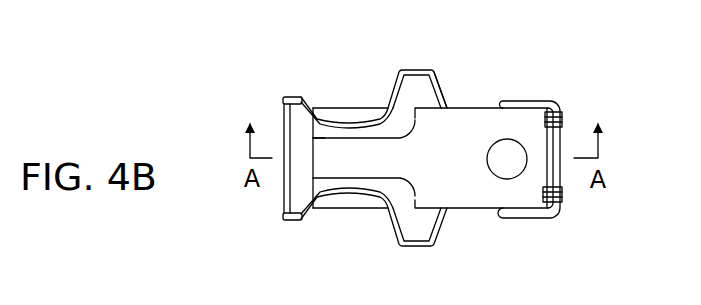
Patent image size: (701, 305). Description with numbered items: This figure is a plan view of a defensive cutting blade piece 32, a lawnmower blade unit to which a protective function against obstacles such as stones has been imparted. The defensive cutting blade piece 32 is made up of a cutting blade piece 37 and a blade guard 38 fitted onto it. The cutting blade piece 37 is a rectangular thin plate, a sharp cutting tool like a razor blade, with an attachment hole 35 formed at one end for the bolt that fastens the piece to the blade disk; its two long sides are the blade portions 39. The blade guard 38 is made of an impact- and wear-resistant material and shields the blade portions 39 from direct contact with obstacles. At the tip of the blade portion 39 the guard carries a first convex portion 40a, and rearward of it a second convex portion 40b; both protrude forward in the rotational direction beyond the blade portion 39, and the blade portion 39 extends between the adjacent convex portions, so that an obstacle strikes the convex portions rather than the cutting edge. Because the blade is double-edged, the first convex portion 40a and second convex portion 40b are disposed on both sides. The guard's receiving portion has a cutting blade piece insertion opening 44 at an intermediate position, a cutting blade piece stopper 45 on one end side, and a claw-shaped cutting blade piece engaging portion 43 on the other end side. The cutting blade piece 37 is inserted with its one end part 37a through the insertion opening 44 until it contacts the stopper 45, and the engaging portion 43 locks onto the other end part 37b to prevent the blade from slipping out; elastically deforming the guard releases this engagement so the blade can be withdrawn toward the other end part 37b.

The defensive cutting blade piece 32 is at (567, 103).
The attachment hole 35 is at (510, 152).
The cutting blade piece 37 is at (471, 106).
The one end part 37a is at (320, 165).
The other end part 37b is at (540, 158).
The blade guard 38 is at (438, 67).
The blade portion 39 is at (357, 108).
The first convex portion 40a is at (289, 97).
The second convex portion 40b is at (416, 70).
The cutting blade piece engaging portion 43 is at (561, 123).
The cutting blade piece insertion opening 44 is at (415, 118).
The cutting blade piece stopper 45 is at (315, 137).